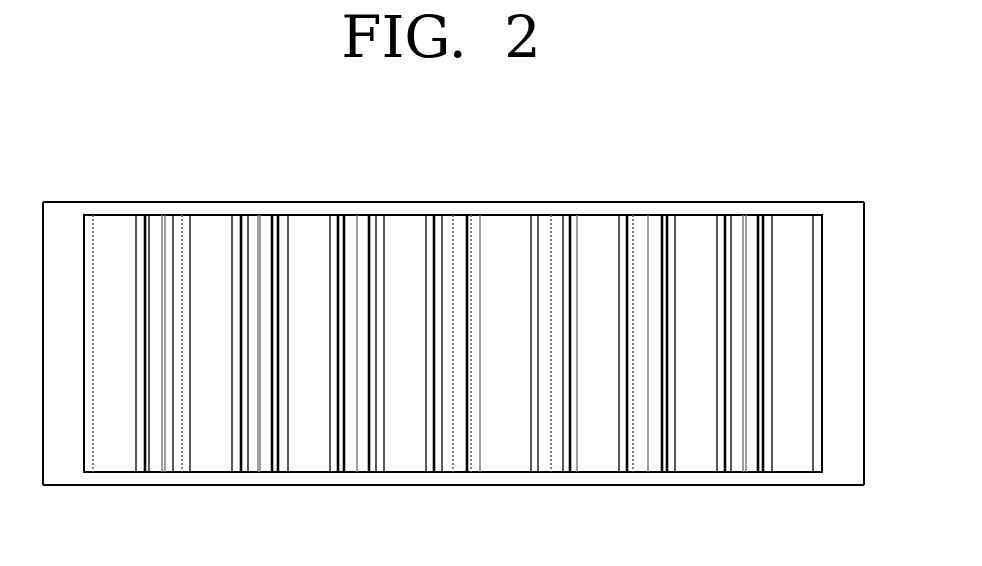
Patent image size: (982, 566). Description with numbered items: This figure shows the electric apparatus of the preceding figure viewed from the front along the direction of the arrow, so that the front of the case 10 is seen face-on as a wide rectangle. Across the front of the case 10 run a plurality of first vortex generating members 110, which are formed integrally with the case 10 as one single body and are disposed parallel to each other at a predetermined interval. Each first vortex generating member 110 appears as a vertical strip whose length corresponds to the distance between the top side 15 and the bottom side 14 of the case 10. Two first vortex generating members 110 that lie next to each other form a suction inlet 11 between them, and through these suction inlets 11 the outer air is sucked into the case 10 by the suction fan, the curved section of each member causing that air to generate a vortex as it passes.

The case 10 is at (453, 303).
The suction inlet 11 is at (265, 462).
The bottom side 14 is at (418, 487).
The top side 15 is at (478, 202).
The first vortex generating member 110 is at (453, 381).